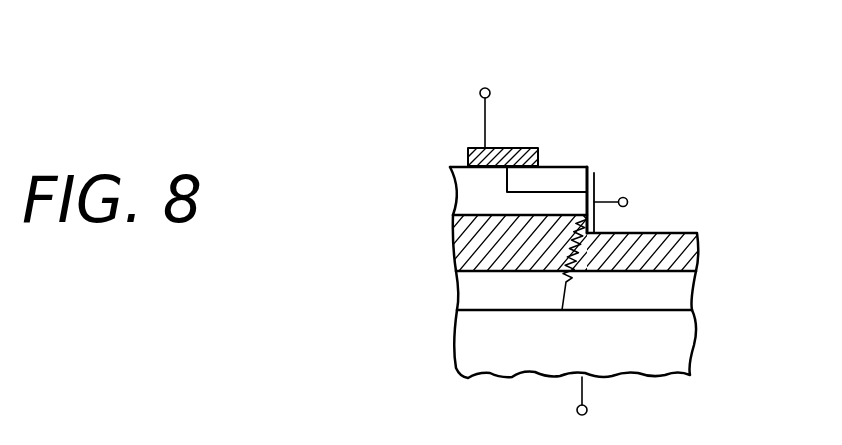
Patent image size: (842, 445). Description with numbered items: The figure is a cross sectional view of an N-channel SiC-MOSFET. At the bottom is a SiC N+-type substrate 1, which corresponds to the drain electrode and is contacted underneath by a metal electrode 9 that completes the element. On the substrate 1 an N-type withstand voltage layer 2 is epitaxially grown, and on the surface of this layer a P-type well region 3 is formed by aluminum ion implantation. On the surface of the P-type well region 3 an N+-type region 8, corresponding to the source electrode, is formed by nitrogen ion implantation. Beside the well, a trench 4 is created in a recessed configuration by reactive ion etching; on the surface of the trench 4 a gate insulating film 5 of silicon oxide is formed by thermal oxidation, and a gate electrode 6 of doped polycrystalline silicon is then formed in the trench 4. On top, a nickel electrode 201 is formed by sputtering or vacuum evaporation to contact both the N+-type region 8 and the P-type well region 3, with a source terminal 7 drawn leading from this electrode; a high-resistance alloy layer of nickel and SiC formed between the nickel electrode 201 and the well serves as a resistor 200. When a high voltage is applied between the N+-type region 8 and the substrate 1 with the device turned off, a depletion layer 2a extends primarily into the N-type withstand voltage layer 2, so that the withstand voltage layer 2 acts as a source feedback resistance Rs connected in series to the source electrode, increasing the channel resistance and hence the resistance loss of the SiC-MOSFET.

The N+-type substrate 1 is at (682, 340).
The N-type withstand voltage layer 2 is at (488, 295).
The depletion layer 2a is at (483, 253).
The P-type well region 3 is at (462, 202).
The trench 4 is at (617, 176).
The gate insulating film 5 is at (592, 172).
The gate electrode 6 is at (596, 222).
The source terminal 7 is at (485, 113).
The N+-type region 8 is at (558, 170).
The metal electrode 9 is at (584, 393).
The resistor 200 is at (453, 181).
The nickel electrode 201 is at (519, 148).
The source feedback resistance Rs is at (568, 297).